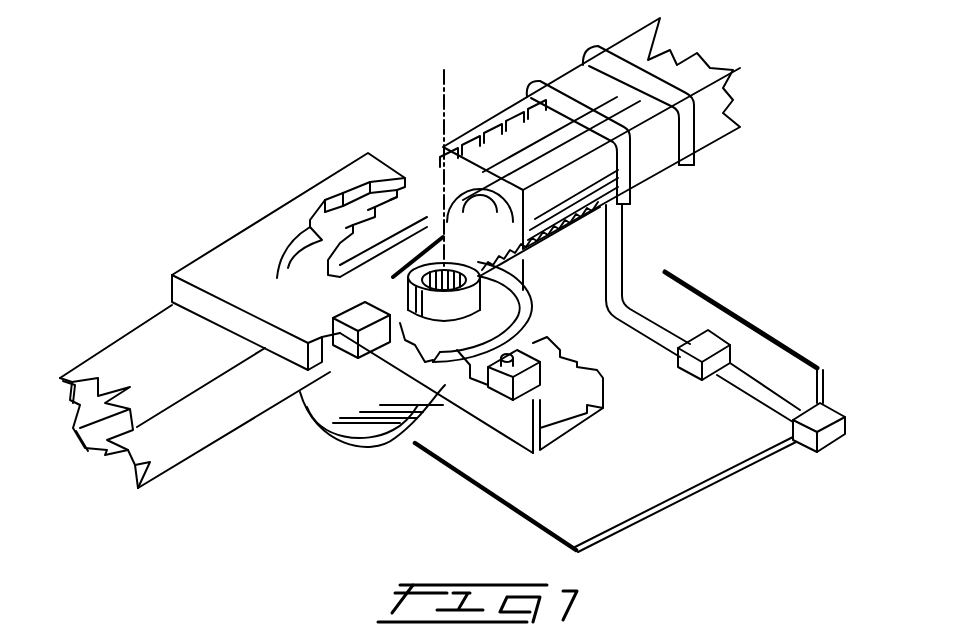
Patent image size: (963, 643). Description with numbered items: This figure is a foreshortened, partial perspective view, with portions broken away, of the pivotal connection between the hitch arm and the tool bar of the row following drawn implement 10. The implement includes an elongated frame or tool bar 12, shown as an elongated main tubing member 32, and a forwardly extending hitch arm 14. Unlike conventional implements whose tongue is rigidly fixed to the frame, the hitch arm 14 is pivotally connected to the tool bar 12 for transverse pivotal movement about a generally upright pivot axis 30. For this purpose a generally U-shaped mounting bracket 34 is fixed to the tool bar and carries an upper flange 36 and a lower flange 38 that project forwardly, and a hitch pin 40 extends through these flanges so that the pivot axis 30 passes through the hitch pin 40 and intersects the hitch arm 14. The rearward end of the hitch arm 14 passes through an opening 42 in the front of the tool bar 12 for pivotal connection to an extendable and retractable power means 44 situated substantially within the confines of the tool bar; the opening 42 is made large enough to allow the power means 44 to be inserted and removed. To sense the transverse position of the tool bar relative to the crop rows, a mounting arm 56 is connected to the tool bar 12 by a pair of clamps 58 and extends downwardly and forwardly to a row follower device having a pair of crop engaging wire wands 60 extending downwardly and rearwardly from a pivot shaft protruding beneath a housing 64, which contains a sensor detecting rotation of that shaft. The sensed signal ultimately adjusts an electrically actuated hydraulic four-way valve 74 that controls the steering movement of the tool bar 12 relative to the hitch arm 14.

The row following drawn implement 10 is at (268, 156).
The tool bar 12 is at (110, 346).
The hitch arm 14 is at (604, 389).
The pivot axis 30 is at (442, 104).
The main tubing member 32 is at (487, 130).
The mounting bracket 34 is at (189, 260).
The upper flange 36 is at (248, 238).
The lower flange 38 is at (293, 400).
The hitch pin 40 is at (437, 322).
The opening 42 is at (363, 347).
The power means 44 is at (534, 153).
The mounting arm 56 is at (620, 265).
The clamps 58 is at (684, 167).
The wire wands 60 is at (735, 313).
The housing 64 is at (840, 410).
The electrically actuated hydraulic four-way valve 74 is at (505, 390).